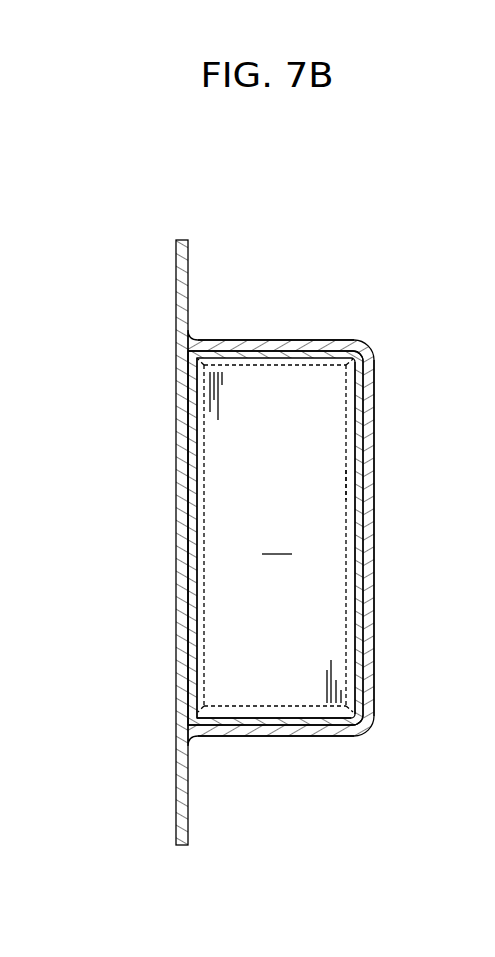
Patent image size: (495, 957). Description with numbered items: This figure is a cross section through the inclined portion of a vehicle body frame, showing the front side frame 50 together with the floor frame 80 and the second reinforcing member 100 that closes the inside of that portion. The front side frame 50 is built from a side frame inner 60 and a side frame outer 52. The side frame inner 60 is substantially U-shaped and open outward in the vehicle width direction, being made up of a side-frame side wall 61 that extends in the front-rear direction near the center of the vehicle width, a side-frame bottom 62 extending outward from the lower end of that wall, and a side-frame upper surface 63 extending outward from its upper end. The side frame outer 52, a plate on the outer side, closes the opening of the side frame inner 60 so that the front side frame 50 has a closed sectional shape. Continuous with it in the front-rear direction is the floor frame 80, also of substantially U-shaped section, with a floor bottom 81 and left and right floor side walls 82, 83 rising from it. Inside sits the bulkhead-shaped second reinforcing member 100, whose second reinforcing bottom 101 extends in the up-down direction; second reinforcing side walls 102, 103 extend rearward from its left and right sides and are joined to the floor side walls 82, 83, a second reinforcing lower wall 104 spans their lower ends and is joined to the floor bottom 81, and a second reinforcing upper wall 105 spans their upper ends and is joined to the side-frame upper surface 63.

The front side frame 50 is at (108, 184).
The side frame outer 52 is at (174, 293).
The side frame inner 60 is at (250, 343).
The side-frame side wall 61 is at (371, 547).
The side-frame bottom 62 is at (272, 739).
The side-frame upper surface 63 is at (335, 342).
The floor frame 80 is at (178, 596).
The floor bottom 81 is at (313, 739).
The floor side wall 82 is at (181, 528).
The floor side wall 83 is at (373, 630).
The second reinforcing member 100 is at (328, 462).
The second reinforcing bottom 101 is at (327, 495).
The second reinforcing side wall 102 is at (200, 490).
The second reinforcing side wall 103 is at (352, 562).
The second reinforcing lower wall 104 is at (251, 711).
The second reinforcing upper wall 105 is at (278, 366).